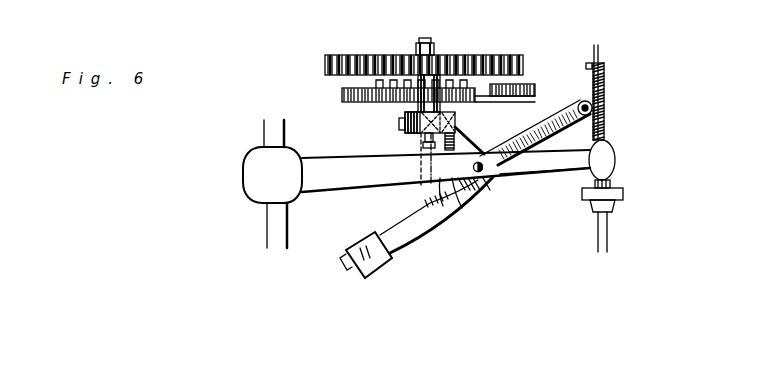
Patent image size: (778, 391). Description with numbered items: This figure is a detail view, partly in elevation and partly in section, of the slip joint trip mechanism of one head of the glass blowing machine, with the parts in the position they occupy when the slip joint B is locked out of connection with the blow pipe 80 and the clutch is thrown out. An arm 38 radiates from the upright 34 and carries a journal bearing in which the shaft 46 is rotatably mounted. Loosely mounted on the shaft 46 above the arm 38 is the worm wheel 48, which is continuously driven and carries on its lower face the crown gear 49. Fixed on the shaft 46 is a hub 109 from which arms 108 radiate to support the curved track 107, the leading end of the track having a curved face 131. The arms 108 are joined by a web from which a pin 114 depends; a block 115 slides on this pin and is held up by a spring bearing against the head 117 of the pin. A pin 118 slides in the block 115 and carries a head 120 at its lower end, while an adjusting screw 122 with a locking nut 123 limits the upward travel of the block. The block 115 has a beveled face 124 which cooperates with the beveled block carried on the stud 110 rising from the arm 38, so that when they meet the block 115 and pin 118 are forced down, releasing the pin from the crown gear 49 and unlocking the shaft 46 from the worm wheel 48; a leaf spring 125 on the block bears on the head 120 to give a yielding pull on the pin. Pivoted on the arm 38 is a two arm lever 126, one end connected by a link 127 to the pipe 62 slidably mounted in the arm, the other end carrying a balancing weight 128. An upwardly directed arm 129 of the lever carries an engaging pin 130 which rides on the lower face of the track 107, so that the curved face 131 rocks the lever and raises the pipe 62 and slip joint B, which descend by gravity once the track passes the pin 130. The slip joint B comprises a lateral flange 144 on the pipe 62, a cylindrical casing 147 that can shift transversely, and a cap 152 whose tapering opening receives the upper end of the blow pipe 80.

The upright 34 is at (265, 222).
The arm 38 is at (322, 182).
The shaft 46 is at (432, 44).
The worm wheel 48 is at (500, 55).
The crown gear 49 is at (393, 68).
The pipe 62 is at (600, 68).
The blow pipe 80 is at (610, 240).
The curved track 107 is at (343, 98).
The arm 108 is at (402, 104).
The hub 109 is at (424, 98).
The stud 110 is at (419, 136).
The pin 114 is at (450, 110).
The block 115 is at (460, 128).
The head 117 is at (473, 168).
The pin 118 is at (406, 134).
The head 120 is at (410, 136).
The adjusting screw 122 is at (452, 206).
The locking nut 123 is at (432, 152).
The beveled face 124 is at (456, 133).
The leaf spring 125 is at (425, 143).
The two arm lever 126 is at (488, 194).
The link 127 is at (605, 130).
The balancing weight 128 is at (395, 259).
The arm 129 is at (515, 172).
The engaging pin 130 is at (522, 106).
The curved face 131 is at (342, 92).
The lateral flange 144 is at (614, 186).
The cylindrical casing 147 is at (625, 194).
The cap 152 is at (616, 208).
The slip joint B is at (598, 207).